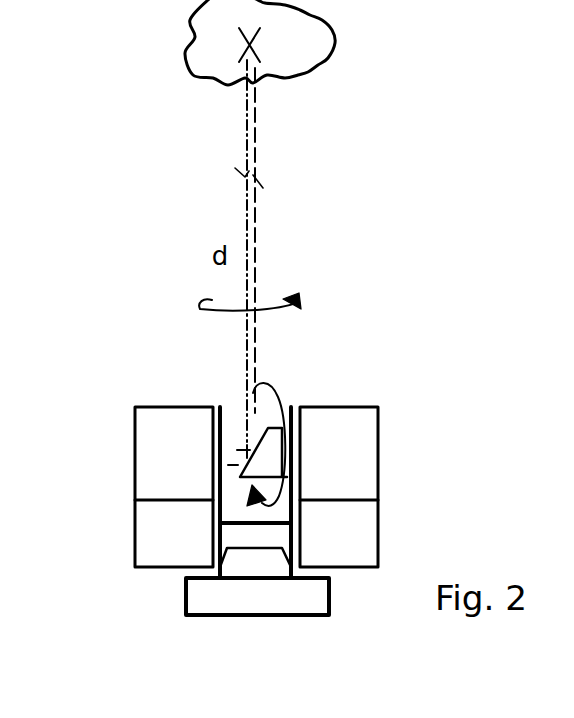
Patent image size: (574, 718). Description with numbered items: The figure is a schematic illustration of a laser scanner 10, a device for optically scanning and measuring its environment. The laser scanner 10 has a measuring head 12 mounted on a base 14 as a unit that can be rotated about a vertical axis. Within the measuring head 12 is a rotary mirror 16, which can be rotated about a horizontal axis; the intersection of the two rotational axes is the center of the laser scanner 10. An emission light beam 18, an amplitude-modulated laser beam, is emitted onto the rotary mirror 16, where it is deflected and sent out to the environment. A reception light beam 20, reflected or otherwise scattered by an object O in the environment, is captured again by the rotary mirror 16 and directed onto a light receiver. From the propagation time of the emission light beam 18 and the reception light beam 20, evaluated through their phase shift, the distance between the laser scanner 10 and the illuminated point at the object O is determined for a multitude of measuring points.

The object O is at (338, 52).
The laser scanner 10 is at (197, 487).
The measuring head 12 is at (165, 467).
The base 14 is at (202, 594).
The rotary mirror 16 is at (267, 433).
The emission light beam 18 is at (255, 242).
The reception light beam 20 is at (246, 133).